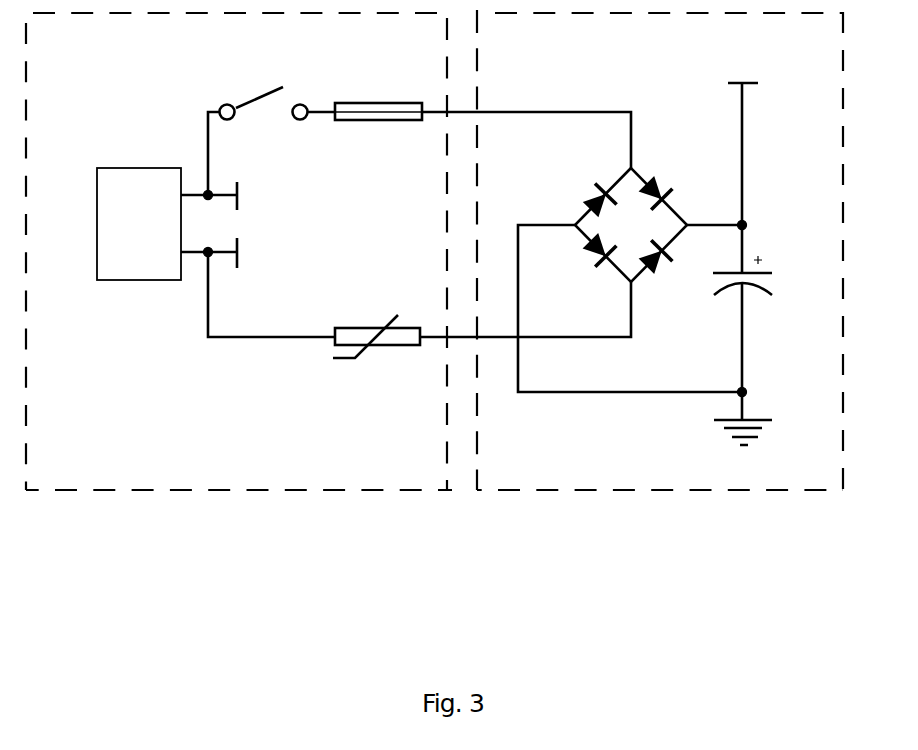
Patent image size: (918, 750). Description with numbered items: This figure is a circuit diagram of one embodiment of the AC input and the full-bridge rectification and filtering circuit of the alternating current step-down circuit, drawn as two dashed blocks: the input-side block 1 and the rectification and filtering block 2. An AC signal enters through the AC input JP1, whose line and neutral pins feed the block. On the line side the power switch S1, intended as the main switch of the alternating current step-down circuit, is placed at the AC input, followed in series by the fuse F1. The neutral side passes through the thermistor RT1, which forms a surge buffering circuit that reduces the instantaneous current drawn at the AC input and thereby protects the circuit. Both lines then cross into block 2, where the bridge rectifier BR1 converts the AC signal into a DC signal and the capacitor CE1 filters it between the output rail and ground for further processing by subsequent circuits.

The input module 1 is at (328, 251).
The rectifier module 2 is at (660, 250).
The AC input JP1 is at (177, 227).
The power switch S1 is at (264, 92).
The fuse F1 is at (377, 99).
The thermistor RT1 is at (376, 323).
The bridge rectifier BR1 is at (639, 229).
The electrolytic capacitor CE1 is at (765, 271).